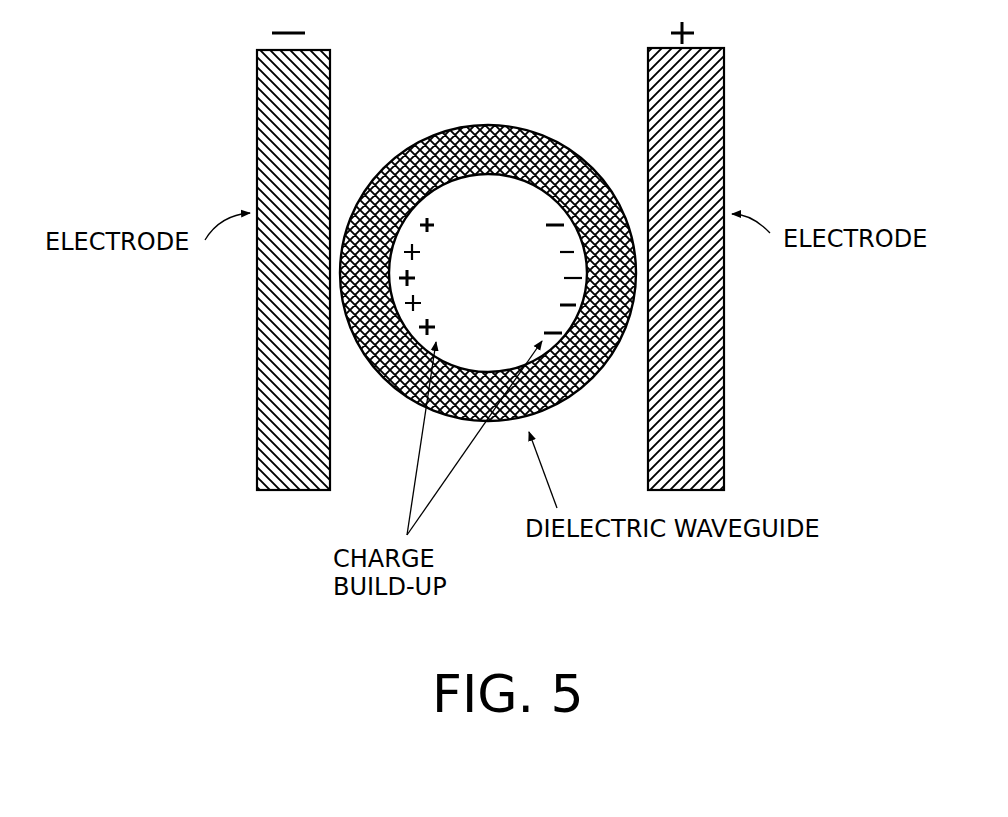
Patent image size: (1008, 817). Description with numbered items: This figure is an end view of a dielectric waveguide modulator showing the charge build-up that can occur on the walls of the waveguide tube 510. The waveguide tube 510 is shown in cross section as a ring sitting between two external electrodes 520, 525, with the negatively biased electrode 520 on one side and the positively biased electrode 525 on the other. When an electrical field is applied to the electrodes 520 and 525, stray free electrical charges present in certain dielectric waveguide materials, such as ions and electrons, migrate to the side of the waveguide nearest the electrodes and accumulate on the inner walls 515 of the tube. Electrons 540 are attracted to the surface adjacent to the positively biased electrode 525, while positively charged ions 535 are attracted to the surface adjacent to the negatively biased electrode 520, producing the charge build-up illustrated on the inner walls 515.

The waveguide tube 510 is at (507, 128).
The inner walls 515 is at (480, 372).
The electrode 520 is at (257, 437).
The electrode 525 is at (725, 395).
The positively charged ions 535 is at (428, 216).
The electrons 540 is at (559, 222).